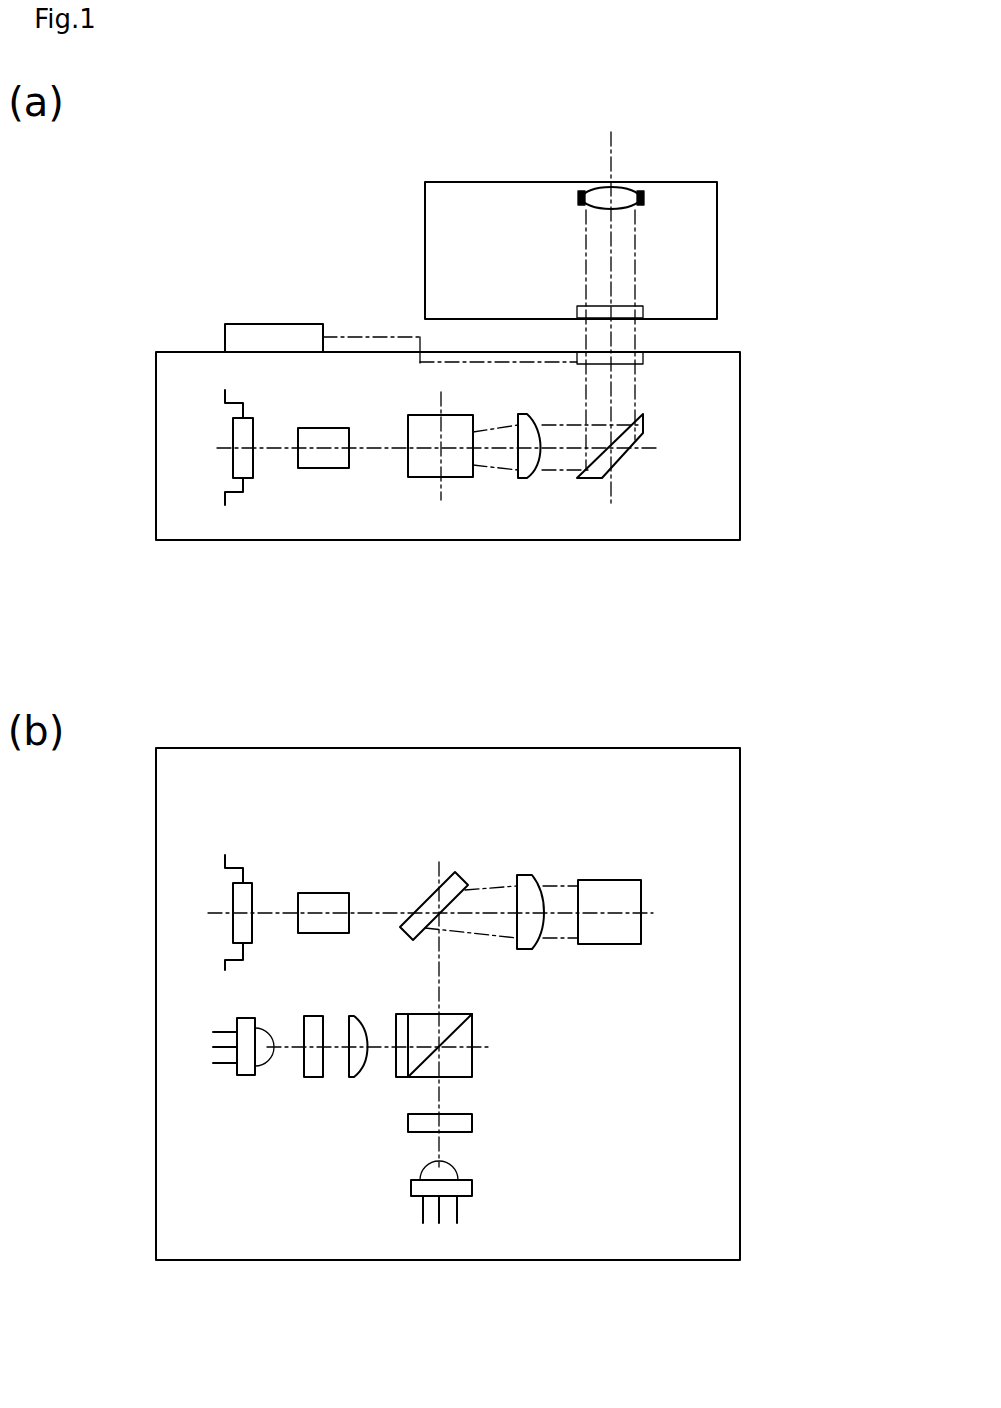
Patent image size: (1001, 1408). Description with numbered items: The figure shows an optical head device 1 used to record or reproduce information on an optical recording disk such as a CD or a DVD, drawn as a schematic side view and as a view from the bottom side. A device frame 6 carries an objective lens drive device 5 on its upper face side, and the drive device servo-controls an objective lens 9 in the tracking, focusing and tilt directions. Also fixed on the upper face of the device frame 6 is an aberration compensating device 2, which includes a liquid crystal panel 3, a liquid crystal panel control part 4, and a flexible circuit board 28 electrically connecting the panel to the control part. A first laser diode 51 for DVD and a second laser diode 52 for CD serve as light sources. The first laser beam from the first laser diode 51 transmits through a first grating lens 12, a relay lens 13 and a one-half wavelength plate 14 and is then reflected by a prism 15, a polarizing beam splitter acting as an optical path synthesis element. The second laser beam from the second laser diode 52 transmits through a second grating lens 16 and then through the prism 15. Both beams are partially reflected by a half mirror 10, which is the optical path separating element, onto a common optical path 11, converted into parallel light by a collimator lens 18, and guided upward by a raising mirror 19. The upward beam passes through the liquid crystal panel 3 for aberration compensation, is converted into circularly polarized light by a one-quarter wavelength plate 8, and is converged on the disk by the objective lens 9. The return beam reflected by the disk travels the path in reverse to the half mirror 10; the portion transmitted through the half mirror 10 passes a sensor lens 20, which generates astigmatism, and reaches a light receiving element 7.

The optical head device 1 is at (843, 210).
The aberration compensating device 2 is at (398, 253).
The liquid crystal panel 3 is at (578, 352).
The liquid crystal panel control part 4 is at (270, 324).
The objective lens drive device 5 is at (733, 241).
The device frame 6 is at (753, 394).
The light receiving element 7 is at (253, 480).
The 1/4 wavelength plate 8 is at (645, 308).
The objective lens 9 is at (622, 184).
The half mirror 10 is at (428, 478).
The common optical path 11 is at (497, 467).
The first grating lens 12 is at (310, 1077).
The relay lens 13 is at (357, 1077).
The 1/2 wavelength plate 14 is at (402, 1077).
The prism 15 is at (475, 1062).
The second grating lens 16 is at (472, 1123).
The collimator lens 18 is at (525, 480).
The raising mirror 19 is at (620, 466).
The sensor lens 20 is at (320, 468).
The flexible circuit board 28 is at (368, 337).
The first laser diode 51 is at (243, 1075).
The second laser diode 52 is at (472, 1187).